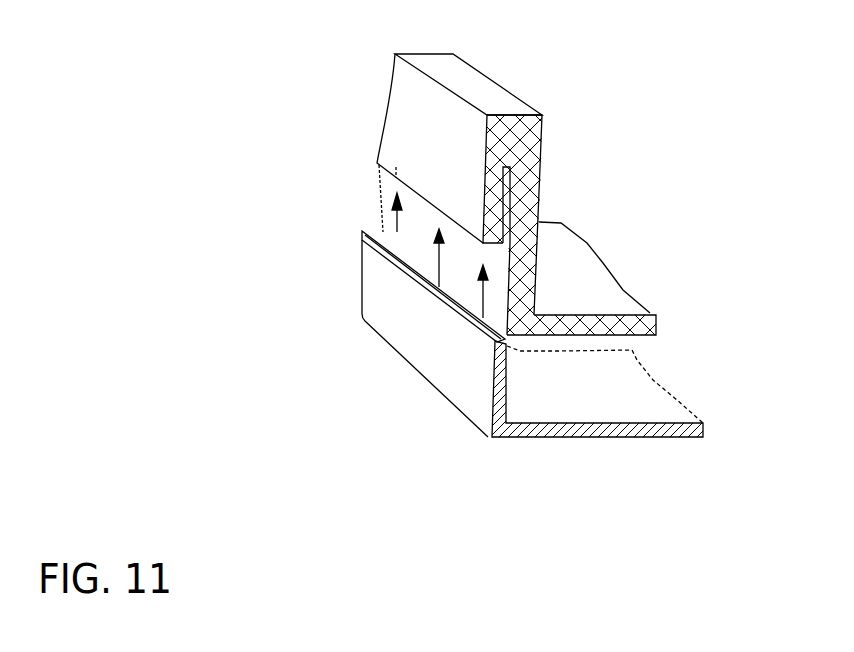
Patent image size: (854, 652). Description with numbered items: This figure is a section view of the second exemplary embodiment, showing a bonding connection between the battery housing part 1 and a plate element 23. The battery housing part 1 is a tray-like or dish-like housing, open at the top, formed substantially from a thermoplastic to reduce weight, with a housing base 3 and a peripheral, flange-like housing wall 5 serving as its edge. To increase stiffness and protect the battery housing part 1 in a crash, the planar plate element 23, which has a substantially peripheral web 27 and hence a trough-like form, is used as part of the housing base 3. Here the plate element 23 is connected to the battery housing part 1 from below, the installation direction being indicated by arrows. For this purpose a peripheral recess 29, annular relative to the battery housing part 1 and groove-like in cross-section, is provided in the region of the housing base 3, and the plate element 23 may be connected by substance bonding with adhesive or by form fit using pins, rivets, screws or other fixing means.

The battery housing part 1 is at (333, 119).
The housing base 3 is at (593, 303).
The housing wall 5 is at (512, 142).
The plate element 23 is at (563, 393).
The web 27 is at (423, 334).
The recess 29 is at (508, 210).